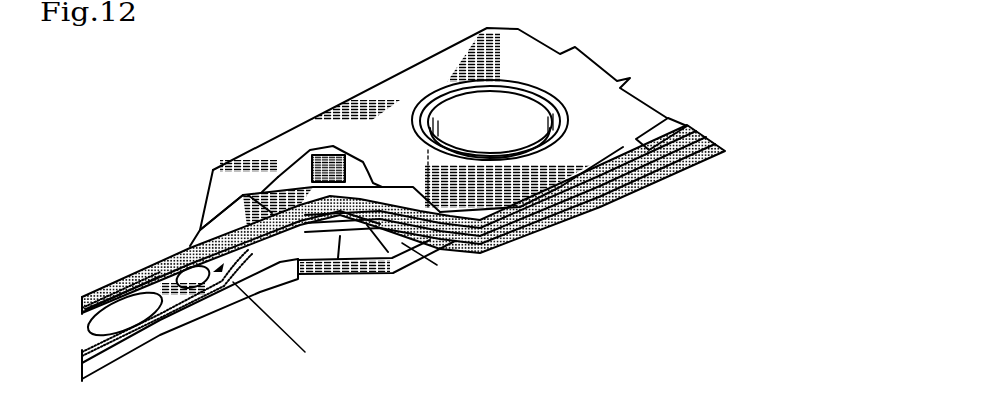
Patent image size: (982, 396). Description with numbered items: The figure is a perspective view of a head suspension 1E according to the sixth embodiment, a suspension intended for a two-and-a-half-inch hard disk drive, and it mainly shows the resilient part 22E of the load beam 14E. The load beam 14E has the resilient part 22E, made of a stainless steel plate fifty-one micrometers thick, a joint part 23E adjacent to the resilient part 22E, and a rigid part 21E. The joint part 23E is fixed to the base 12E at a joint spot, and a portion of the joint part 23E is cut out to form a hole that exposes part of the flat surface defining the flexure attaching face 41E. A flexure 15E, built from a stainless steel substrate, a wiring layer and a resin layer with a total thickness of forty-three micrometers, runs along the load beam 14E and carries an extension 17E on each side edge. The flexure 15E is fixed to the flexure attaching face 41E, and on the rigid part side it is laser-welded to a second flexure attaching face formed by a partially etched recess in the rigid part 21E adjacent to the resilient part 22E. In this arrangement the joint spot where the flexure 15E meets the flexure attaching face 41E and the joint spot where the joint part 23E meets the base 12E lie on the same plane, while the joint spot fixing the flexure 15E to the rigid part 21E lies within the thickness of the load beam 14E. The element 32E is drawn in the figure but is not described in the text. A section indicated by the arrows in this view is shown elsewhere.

The head suspension 1E is at (325, 103).
The base 12E is at (412, 58).
The load beam 14E is at (108, 272).
The flexure 15E is at (490, 245).
The extension 17E is at (277, 180).
The rigid part 21E is at (98, 289).
The resilient part 22E is at (225, 208).
The joint part 23E is at (300, 168).
The tab 32E is at (395, 253).
The flexure attaching face 41E is at (333, 143).